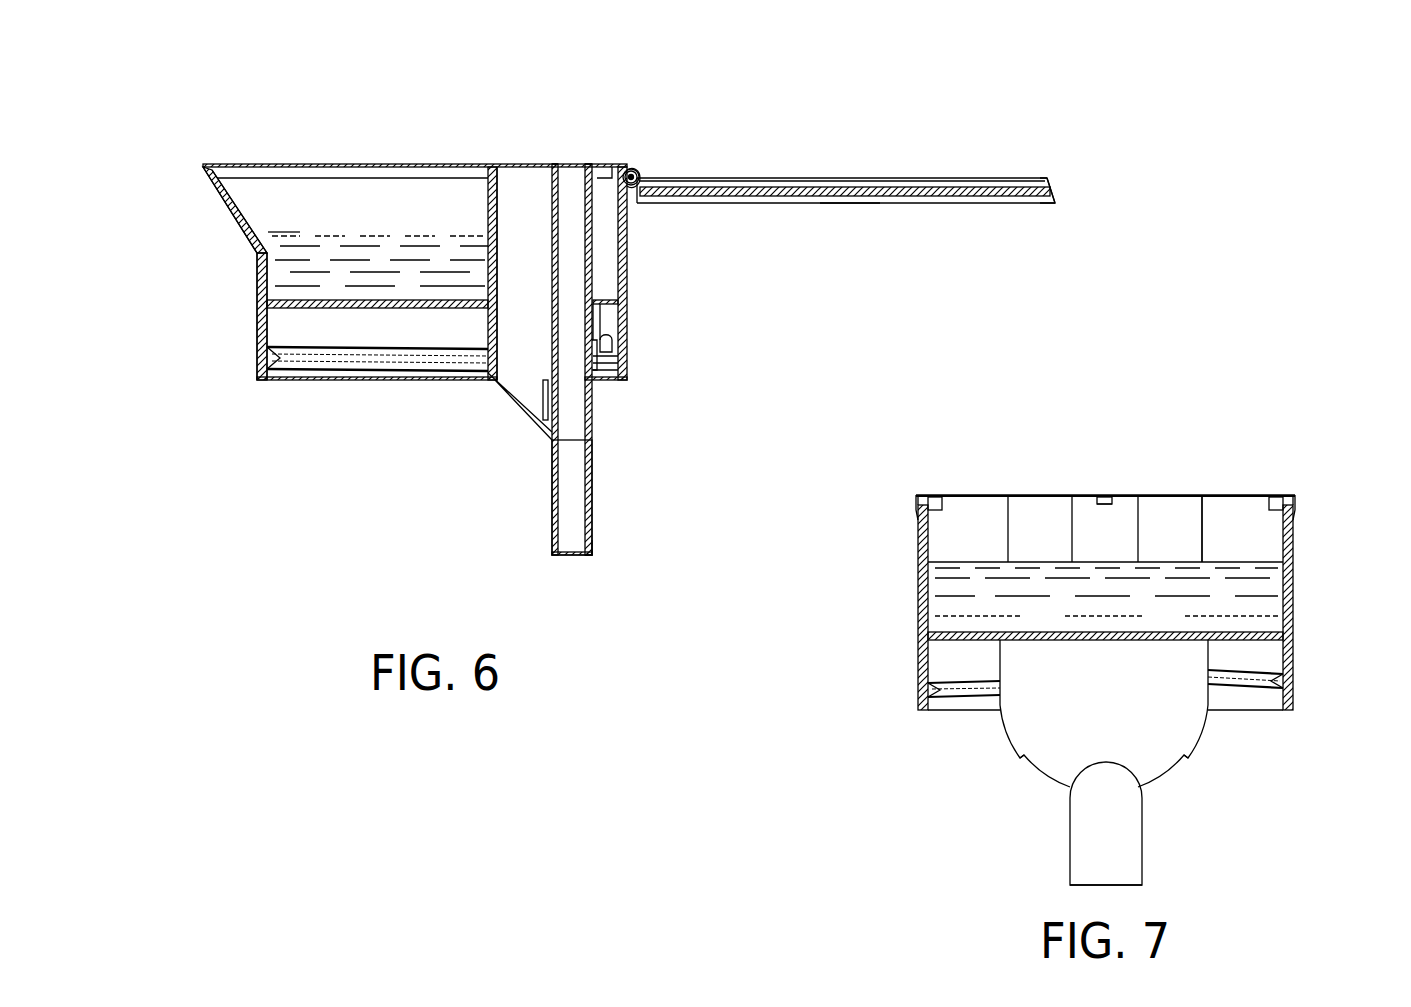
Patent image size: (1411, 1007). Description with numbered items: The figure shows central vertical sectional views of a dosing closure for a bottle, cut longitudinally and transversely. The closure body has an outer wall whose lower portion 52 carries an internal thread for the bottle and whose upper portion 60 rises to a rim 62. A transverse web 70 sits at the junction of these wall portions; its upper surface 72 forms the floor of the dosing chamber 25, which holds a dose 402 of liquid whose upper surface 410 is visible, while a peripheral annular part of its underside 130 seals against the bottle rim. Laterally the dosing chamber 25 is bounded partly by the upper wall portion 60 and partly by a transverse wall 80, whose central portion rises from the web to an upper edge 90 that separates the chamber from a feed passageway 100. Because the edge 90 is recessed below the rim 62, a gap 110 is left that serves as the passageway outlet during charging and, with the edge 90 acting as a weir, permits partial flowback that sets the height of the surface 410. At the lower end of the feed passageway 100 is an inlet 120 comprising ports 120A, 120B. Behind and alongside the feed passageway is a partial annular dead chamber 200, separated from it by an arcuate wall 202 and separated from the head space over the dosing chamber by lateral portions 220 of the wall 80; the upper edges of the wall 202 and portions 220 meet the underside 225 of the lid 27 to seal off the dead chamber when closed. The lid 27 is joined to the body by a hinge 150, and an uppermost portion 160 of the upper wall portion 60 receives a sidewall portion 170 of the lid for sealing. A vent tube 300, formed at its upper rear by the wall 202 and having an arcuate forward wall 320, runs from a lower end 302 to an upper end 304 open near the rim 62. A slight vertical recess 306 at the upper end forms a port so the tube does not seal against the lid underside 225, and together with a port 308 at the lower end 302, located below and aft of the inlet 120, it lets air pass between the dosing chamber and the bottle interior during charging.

In FIG. 6, the dosing chamber 25 is at (266, 248).
In FIG. 6, the lid 27 is at (848, 213).
In FIG. 7, the lower portion of the wall 52 is at (1288, 658).
In FIG. 6, the upper portion of the wall 60 is at (628, 276).
In FIG. 7, the upper portion of the wall 60 is at (1288, 588).
In FIG. 6, the rim 62 is at (545, 166).
In FIG. 7, the rim 62 is at (1235, 495).
In FIG. 6, the transverse web 70 is at (332, 304).
In FIG. 6, the upper surface 72 is at (300, 298).
In FIG. 6, the transverse wall 80 is at (493, 290).
In FIG. 6, the upper edge 90 is at (490, 238).
In FIG. 7, the upper edge 90 is at (1190, 560).
In FIG. 6, the feed passageway 100 is at (528, 222).
In FIG. 6, the gap 110 is at (505, 198).
In FIG. 7, the inlet 120 is at (1031, 784).
In FIG. 7, the port 120A is at (1181, 777).
In FIG. 6, the port 120B is at (541, 391).
In FIG. 7, the port 120B is at (1050, 788).
In FIG. 6, the underside 130 is at (615, 318).
In FIG. 6, the hinge 150 is at (645, 150).
In FIG. 6, the uppermost portion 160 is at (205, 168).
In FIG. 6, the sidewall portion 170 is at (1046, 180).
In FIG. 6, the dead chamber 200 is at (604, 256).
In FIG. 6, the arcuate wall 202 is at (595, 358).
In FIG. 7, the lateral portions 220 is at (959, 528).
In FIG. 6, the underside of the lid 225 is at (787, 186).
In FIG. 6, the vent tube 300 is at (530, 507).
In FIG. 7, the vent tube 300 is at (1173, 865).
In FIG. 6, the lower end 302 is at (566, 576).
In FIG. 6, the upper end 304 is at (585, 153).
In FIG. 7, the upper end 304 is at (1088, 486).
In FIG. 7, the recess 306 is at (1106, 487).
In FIG. 6, the port 308 is at (600, 561).
In FIG. 6, the arcuate forward wall 320 is at (553, 188).
In FIG. 7, the arcuate forward wall 320 is at (1099, 529).
In FIG. 6, the dose 402 is at (287, 280).
In FIG. 6, the upper surface 410 is at (385, 240).